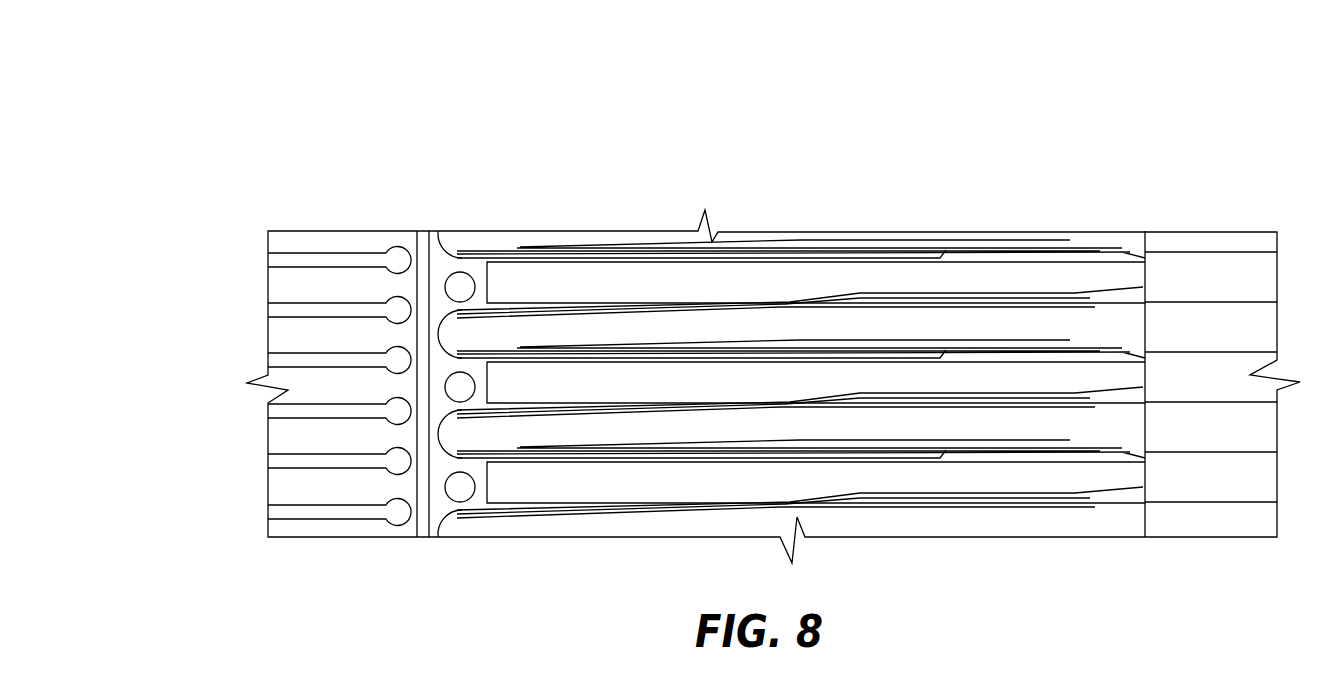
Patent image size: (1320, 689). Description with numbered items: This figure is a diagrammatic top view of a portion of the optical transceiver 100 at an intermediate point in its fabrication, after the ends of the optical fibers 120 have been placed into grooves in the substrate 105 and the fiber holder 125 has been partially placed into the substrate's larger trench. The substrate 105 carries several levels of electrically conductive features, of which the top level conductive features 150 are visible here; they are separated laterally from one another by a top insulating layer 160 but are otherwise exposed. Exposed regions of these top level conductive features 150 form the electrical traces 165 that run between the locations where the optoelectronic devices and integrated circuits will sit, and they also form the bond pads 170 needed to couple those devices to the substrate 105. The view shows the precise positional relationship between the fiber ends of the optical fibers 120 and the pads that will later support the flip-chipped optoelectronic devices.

The optical transceiver 100 is at (250, 115).
The substrate 105 is at (322, 598).
The optical fibers 120 is at (940, 420).
The fiber holder 125 is at (1223, 267).
The top level conductive features 150 is at (742, 288).
The top insulating layer 160 is at (278, 490).
The electrical traces 165 is at (308, 313).
The bond pads 170 is at (398, 263).